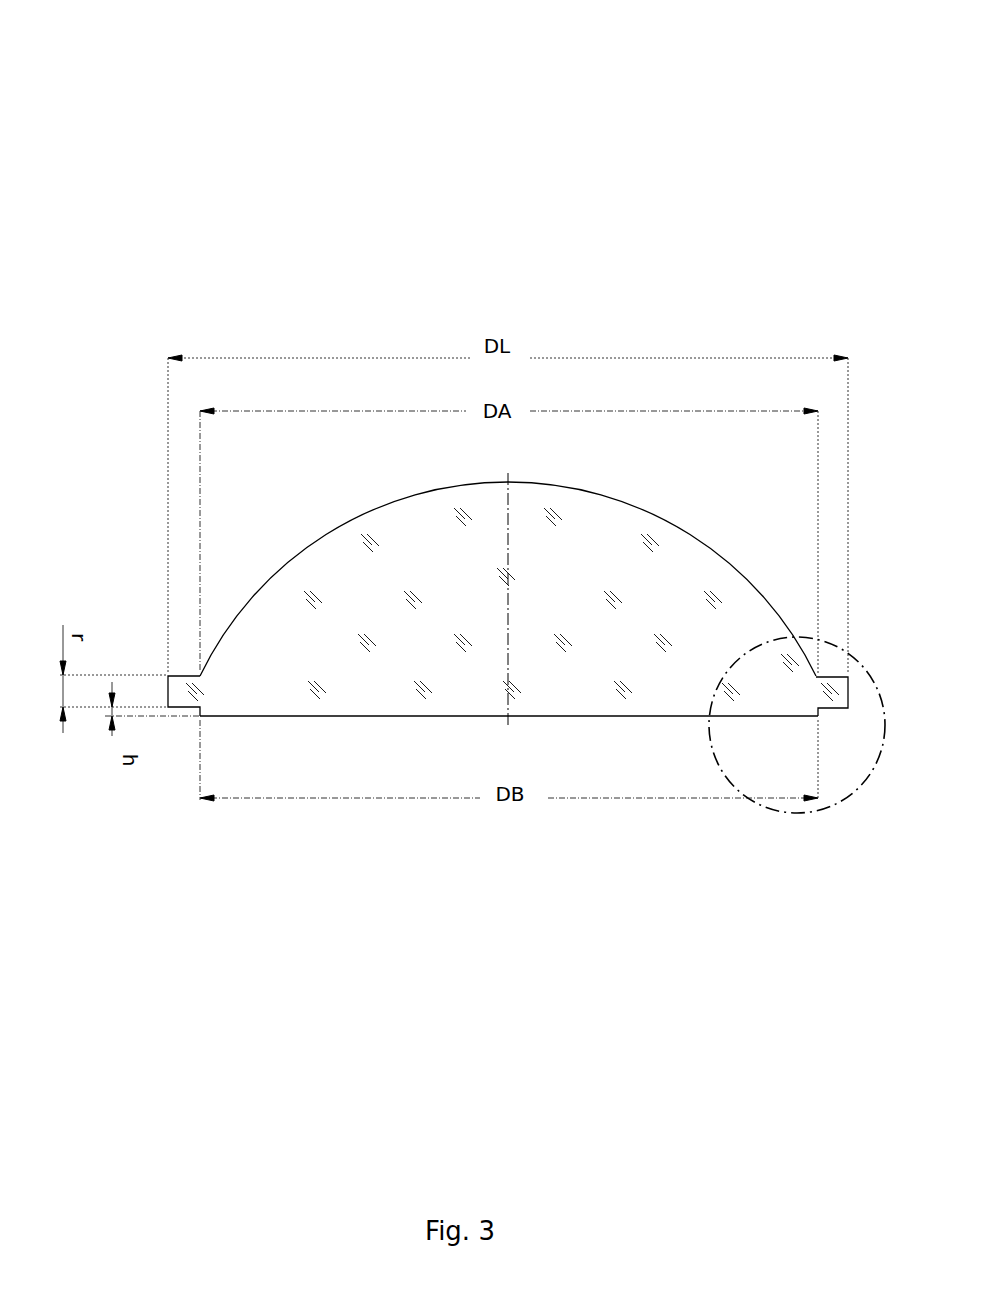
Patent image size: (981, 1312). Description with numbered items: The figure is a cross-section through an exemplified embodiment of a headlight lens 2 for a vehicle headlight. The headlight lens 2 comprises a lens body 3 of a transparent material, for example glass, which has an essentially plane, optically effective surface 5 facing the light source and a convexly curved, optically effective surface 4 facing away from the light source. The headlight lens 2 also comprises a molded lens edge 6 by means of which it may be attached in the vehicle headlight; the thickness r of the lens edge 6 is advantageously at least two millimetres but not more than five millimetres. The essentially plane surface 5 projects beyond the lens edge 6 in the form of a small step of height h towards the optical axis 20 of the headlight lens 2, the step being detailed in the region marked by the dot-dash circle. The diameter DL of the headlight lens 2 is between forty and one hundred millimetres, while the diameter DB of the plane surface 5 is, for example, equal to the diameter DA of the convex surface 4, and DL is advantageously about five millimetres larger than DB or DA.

The headlight lens 2 is at (462, 466).
The lens body 3 is at (273, 667).
The convexly curved optically effective surface 4 is at (312, 547).
The essentially plane optically effective surface 5 is at (340, 716).
The lens edge 6 is at (186, 688).
The optical axis 20 is at (510, 673).